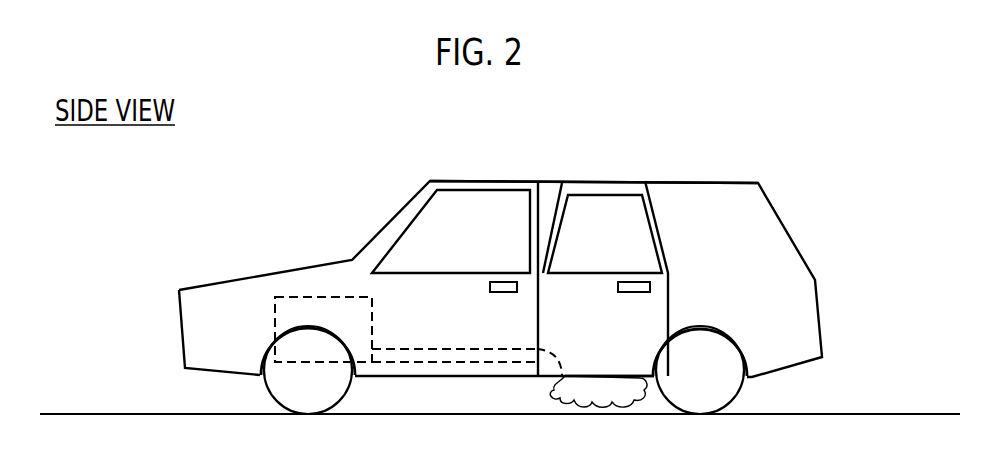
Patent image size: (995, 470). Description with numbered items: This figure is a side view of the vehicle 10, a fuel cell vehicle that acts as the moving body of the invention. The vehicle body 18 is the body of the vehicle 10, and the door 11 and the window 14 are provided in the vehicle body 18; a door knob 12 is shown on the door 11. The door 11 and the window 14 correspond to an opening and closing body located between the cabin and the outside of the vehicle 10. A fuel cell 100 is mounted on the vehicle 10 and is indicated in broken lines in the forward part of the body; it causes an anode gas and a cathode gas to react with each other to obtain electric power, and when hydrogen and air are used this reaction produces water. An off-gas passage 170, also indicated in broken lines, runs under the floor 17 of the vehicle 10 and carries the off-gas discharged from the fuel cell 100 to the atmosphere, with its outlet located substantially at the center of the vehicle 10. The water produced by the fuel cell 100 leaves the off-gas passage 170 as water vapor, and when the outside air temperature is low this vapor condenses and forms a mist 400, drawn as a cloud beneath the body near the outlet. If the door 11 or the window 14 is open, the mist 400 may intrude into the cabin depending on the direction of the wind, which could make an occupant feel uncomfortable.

The vehicle 10 is at (266, 188).
The door 11 is at (642, 255).
The door knob 12 is at (652, 288).
The window 14 is at (573, 192).
The floor 17 is at (523, 378).
The vehicle body 18 is at (478, 181).
The fuel cell 100 is at (352, 297).
The off-gas passage 170 is at (403, 362).
The mist 400 is at (647, 400).